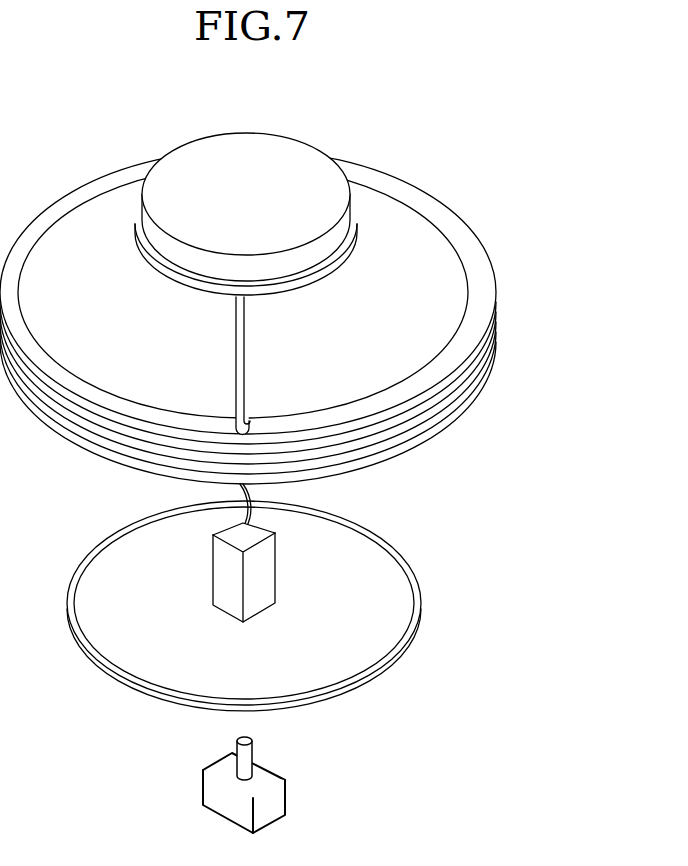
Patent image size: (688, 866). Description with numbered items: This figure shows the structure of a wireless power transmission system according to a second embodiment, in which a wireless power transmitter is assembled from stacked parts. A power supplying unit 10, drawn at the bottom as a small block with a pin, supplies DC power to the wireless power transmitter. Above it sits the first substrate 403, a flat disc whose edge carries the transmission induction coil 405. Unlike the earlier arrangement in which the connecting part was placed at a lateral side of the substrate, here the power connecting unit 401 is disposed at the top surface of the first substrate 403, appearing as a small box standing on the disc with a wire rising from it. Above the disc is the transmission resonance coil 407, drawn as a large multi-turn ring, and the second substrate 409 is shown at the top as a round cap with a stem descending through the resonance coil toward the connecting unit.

The power supplying unit 10 is at (282, 802).
The power connecting unit 401 is at (268, 558).
The first substrate 403 is at (392, 580).
The transmission induction coil 405 is at (407, 643).
The transmission resonance coil 407 is at (497, 341).
The second substrate 409 is at (294, 150).